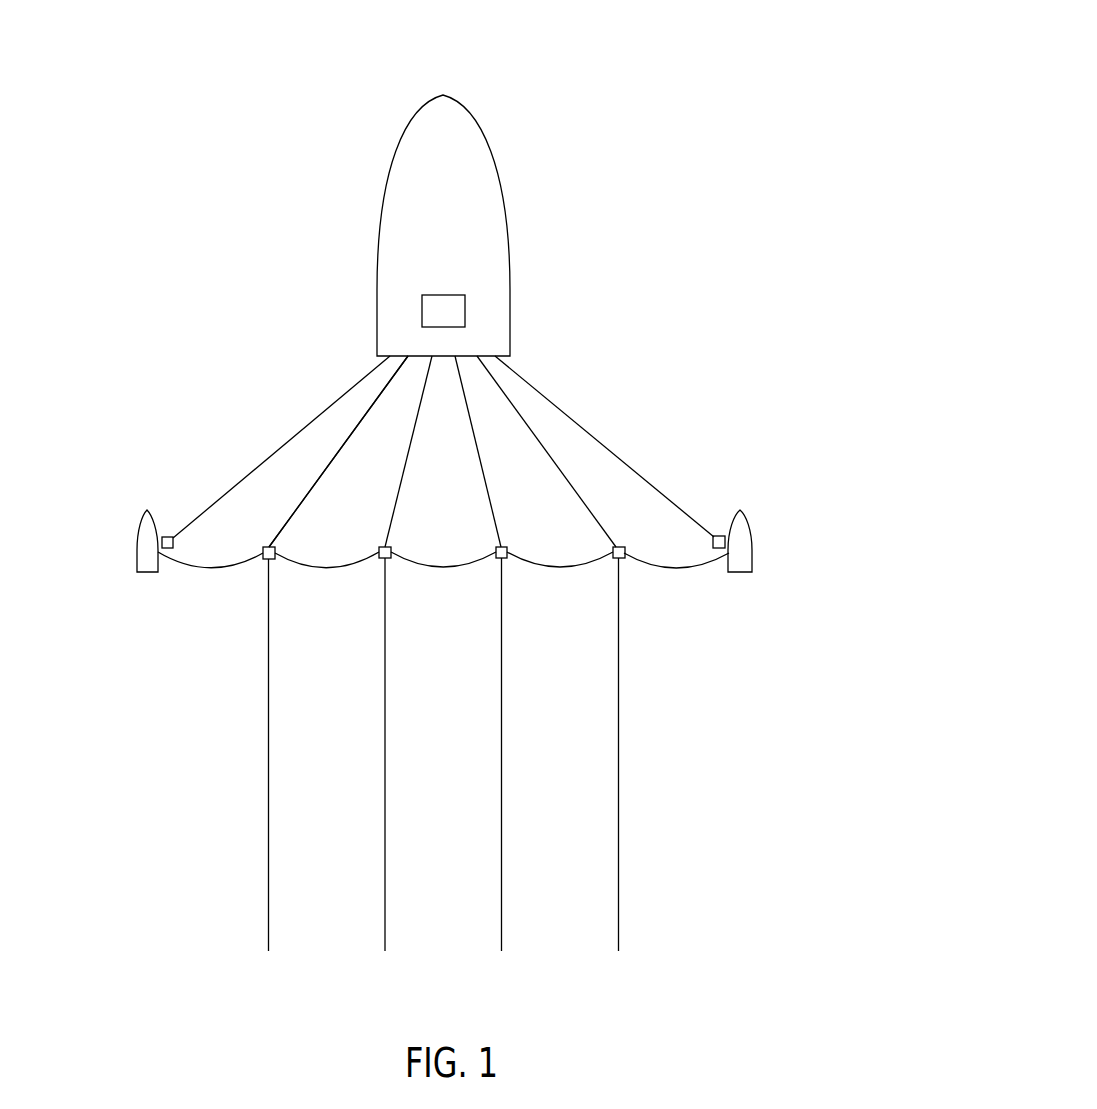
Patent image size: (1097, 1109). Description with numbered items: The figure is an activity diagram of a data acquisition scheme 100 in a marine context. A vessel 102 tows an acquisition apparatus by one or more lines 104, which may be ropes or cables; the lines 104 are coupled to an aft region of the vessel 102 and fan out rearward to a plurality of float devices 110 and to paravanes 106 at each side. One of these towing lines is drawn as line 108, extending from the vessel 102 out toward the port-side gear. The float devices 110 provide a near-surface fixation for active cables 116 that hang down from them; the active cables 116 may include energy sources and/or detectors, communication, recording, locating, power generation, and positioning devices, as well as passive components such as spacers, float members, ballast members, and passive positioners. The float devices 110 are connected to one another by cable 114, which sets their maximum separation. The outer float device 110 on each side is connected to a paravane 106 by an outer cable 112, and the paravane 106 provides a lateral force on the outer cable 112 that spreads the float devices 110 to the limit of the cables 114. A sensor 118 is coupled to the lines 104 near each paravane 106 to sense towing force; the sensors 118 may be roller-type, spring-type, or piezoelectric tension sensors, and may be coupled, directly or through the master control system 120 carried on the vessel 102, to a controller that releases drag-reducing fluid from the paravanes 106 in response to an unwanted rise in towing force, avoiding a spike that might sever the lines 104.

The data acquisition scheme 100 is at (686, 61).
The vessel 102 is at (493, 163).
The lines 104 is at (325, 410).
The paravane 106 is at (135, 523).
The tow line 108 is at (310, 497).
The float devices 110 is at (264, 560).
The outer cable 112 is at (197, 568).
The cable 114 is at (320, 570).
The active cables 116 is at (268, 770).
The sensor 118 is at (165, 535).
The master control system 120 is at (462, 295).